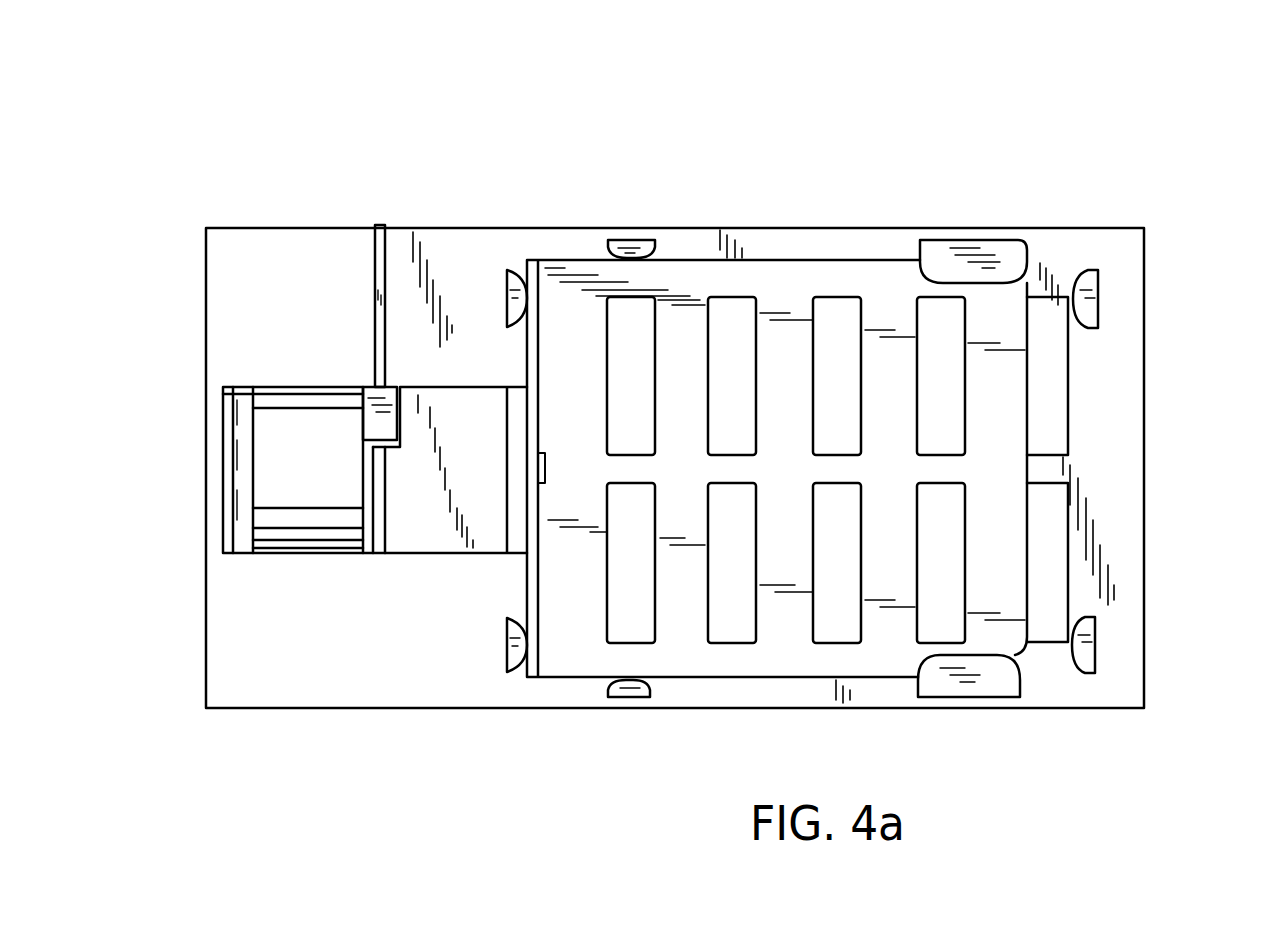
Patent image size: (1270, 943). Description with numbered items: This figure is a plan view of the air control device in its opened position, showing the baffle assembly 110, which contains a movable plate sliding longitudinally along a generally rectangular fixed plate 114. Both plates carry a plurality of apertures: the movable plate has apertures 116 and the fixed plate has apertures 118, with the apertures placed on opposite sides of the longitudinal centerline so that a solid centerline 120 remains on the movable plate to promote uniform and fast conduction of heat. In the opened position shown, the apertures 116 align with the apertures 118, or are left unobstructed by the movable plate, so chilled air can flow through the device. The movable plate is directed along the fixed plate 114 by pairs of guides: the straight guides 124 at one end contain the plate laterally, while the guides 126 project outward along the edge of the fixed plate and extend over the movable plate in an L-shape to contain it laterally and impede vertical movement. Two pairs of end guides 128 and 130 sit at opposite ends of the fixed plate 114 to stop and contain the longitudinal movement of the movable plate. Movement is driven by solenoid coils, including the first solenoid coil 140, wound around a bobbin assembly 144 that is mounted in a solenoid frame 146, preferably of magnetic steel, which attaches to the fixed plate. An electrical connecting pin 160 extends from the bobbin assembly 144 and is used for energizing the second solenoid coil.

The baffle assembly 110 is at (740, 118).
The fixed plate 114 is at (1118, 388).
The movable plate apertures 116 is at (832, 296).
The fixed plate apertures 118 is at (1055, 530).
The solid centerline 120 is at (692, 294).
The straight guides 124 is at (628, 247).
The guides 126 is at (966, 252).
The end guides 128 is at (1097, 288).
The end guides 130 is at (513, 271).
The first solenoid coil 140 is at (290, 410).
The bobbin assembly 144 is at (367, 387).
The solenoid frame 146 is at (459, 405).
The electrical connecting pin 160 is at (385, 226).